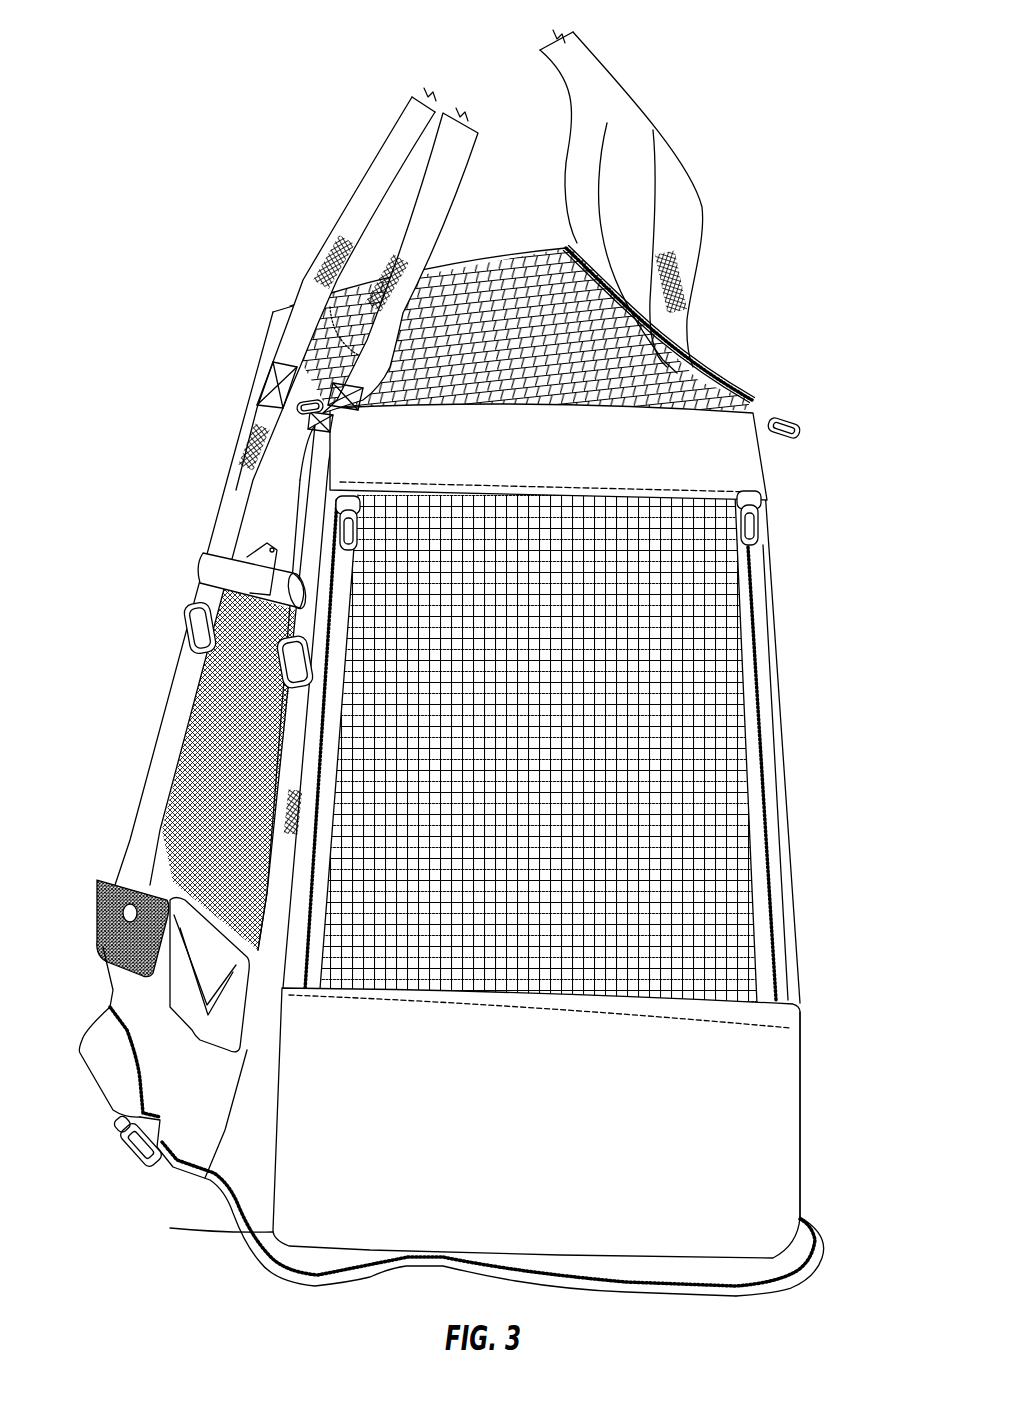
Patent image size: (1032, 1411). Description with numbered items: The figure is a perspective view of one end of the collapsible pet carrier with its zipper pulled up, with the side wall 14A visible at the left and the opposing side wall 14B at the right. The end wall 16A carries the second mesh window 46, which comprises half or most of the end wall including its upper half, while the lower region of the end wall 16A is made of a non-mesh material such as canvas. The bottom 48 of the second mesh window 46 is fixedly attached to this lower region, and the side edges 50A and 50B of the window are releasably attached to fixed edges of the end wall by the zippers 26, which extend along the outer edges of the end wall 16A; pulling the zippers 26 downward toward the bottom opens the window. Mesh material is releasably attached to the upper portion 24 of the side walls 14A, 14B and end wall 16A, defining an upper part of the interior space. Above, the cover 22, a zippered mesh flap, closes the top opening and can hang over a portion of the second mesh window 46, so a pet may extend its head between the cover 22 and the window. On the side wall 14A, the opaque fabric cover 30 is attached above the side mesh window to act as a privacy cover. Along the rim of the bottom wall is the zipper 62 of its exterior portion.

The cover 22 is at (655, 384).
The zipper 26 is at (761, 512).
The upper portion 24 is at (793, 592).
The second mesh window 46 is at (710, 668).
The side edge 50A is at (768, 782).
The side edge 50B is at (320, 727).
The bottom 48 is at (663, 998).
The end wall 16A is at (765, 1062).
The side wall 14B is at (798, 1128).
The side wall 14A is at (110, 980).
The cover 30 is at (205, 572).
The zipper 62 is at (168, 1178).